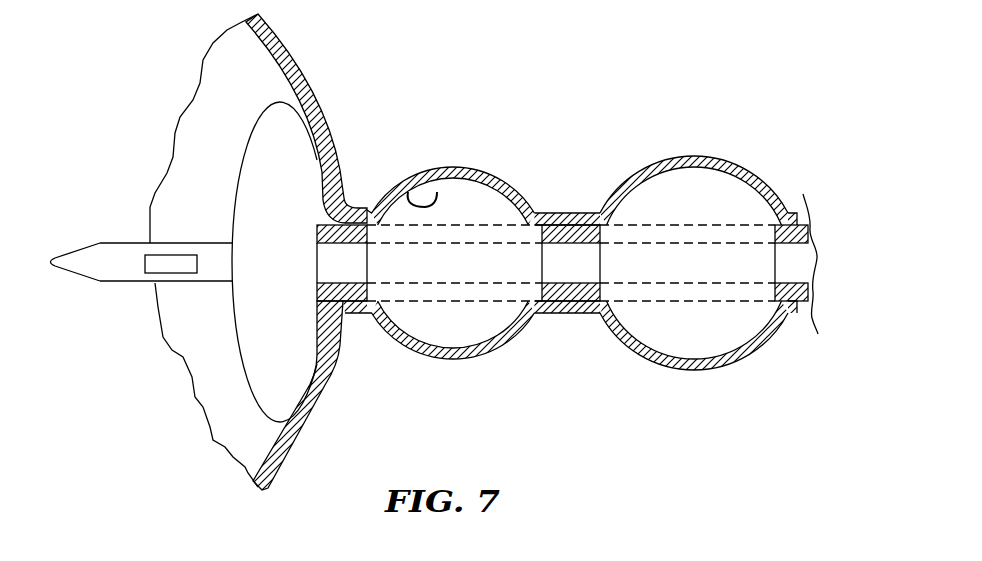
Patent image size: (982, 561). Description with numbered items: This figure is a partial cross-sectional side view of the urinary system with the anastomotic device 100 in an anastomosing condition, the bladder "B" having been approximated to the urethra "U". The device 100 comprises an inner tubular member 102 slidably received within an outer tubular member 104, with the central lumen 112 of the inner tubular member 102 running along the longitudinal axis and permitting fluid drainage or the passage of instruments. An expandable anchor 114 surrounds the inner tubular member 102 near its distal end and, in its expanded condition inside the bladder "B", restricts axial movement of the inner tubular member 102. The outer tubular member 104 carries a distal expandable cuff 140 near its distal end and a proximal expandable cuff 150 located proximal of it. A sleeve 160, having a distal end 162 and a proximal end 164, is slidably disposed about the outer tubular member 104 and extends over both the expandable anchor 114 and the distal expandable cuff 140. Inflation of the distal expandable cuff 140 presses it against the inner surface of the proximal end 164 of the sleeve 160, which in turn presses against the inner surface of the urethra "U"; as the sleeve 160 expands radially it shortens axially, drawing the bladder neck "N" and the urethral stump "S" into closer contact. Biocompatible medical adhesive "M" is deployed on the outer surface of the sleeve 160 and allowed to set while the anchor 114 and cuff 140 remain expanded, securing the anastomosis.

The anastomotic device 100 is at (600, 89).
The inner tubular member 102 is at (208, 283).
The outer tubular member 104 is at (806, 191).
The central lumen 112 is at (819, 276).
The expandable anchor 114 is at (252, 147).
The distal expandable cuff 140 is at (522, 332).
The proximal expandable cuff 150 is at (687, 347).
The sleeve 160 is at (433, 192).
The distal end of sleeve 162 is at (342, 204).
The proximal end of sleeve 164 is at (497, 177).
The bladder B is at (273, 40).
The urethral stump S is at (367, 208).
The medical adhesive M is at (467, 181).
The bladder neck N is at (320, 205).
The urethra U is at (575, 204).